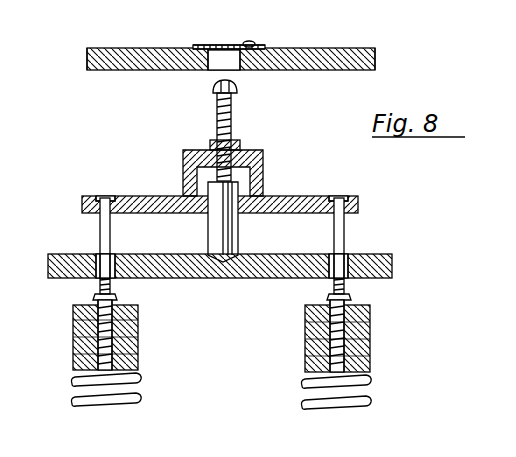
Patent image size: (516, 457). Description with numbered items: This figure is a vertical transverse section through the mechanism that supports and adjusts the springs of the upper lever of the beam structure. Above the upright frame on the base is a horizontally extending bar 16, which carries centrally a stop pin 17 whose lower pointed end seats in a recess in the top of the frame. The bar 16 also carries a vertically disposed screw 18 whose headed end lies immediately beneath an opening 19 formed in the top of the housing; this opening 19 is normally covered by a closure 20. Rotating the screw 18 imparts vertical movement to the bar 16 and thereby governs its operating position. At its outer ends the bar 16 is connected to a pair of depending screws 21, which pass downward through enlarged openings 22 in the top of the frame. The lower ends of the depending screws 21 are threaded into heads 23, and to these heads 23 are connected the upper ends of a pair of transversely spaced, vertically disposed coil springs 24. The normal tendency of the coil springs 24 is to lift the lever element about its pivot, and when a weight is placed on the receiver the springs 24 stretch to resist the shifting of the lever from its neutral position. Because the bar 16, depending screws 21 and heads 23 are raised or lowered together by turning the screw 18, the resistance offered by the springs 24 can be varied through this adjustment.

The horizontally extending bar 16 is at (166, 213).
The stop pin 17 is at (220, 233).
The screw 18 is at (232, 98).
The opening 19 is at (215, 48).
The closure 20 is at (240, 47).
The depending screws 21 is at (98, 230).
The enlarged openings 22 is at (75, 270).
The heads 23 is at (138, 345).
The coil springs 24 is at (114, 402).